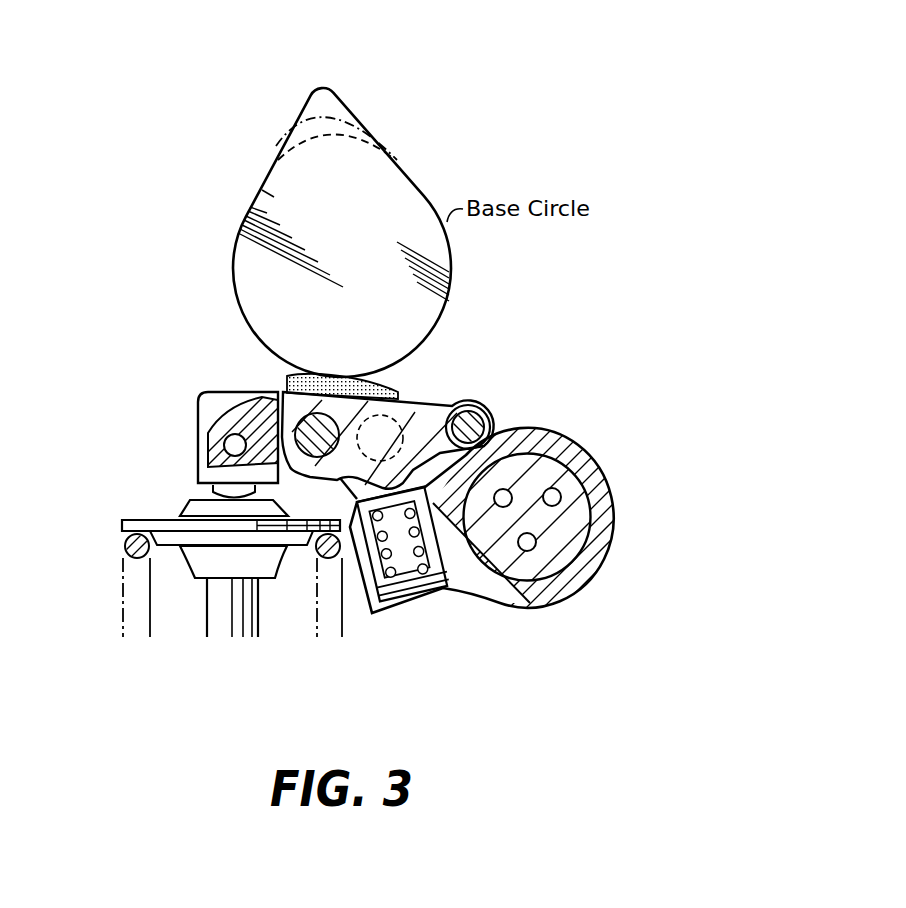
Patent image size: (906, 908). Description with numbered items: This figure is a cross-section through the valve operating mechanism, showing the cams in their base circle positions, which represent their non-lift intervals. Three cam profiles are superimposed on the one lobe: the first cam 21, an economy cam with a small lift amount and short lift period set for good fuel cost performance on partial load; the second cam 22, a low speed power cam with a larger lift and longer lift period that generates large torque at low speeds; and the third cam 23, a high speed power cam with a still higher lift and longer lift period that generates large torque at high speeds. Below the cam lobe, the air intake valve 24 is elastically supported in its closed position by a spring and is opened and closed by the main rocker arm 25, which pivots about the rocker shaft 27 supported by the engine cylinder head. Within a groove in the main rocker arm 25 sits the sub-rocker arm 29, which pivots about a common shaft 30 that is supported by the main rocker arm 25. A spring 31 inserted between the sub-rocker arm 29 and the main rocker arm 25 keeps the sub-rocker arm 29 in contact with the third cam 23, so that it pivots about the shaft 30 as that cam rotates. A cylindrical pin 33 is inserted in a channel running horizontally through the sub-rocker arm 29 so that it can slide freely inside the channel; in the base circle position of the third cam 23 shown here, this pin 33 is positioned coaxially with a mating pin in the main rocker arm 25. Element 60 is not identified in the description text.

The first cam 21 is at (372, 130).
The second cam 22 is at (281, 123).
The third cam 23 is at (348, 100).
The air intake valve 24 is at (237, 612).
The main rocker arm 25 is at (196, 392).
The rocker shaft 27 is at (585, 510).
The sub-rocker arm 29 is at (420, 415).
The common shaft 30 is at (490, 410).
The spring 31 is at (393, 558).
The cylindrical pin 33 is at (284, 387).
The valve spring 60 is at (122, 547).